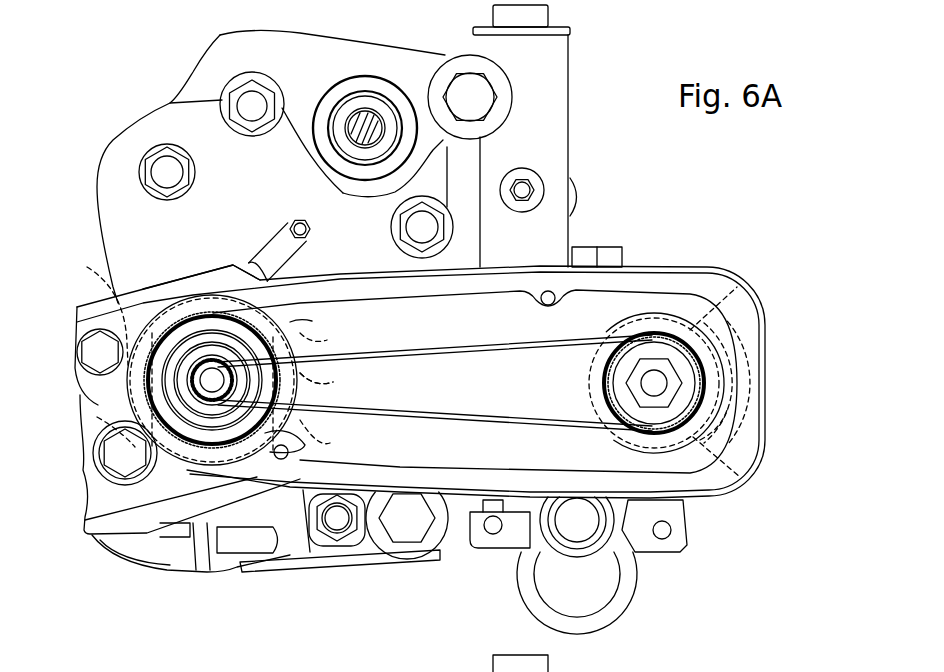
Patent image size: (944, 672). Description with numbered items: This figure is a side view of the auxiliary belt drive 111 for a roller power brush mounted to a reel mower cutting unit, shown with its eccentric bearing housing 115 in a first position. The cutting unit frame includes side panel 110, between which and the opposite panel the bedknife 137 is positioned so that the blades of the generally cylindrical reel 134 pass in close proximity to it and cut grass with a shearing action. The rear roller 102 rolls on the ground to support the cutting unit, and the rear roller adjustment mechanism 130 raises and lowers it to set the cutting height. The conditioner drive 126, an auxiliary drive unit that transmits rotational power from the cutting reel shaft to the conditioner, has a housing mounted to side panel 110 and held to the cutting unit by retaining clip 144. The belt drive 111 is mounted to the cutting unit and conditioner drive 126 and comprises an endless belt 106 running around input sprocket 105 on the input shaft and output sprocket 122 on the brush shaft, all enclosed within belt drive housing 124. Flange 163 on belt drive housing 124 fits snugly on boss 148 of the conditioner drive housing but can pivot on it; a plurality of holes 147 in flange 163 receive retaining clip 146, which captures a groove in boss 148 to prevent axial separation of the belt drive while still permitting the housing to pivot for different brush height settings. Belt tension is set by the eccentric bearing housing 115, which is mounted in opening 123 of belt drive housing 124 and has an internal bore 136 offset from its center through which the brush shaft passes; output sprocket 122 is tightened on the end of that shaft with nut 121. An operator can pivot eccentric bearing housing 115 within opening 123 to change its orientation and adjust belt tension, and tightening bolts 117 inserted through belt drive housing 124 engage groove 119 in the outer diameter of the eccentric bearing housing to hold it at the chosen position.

The rear roller 102 is at (623, 570).
The input sprocket 105 is at (187, 378).
The endless belt 106 is at (462, 417).
The side panel 110 is at (258, 191).
The belt drive 111 is at (770, 230).
The eccentric bearing housing 115 is at (703, 385).
The tightening bolts 117 is at (745, 320).
The groove 119 is at (727, 410).
The nut 121 is at (660, 362).
The output sprocket 122 is at (707, 355).
The opening 123 is at (626, 387).
The belt drive housing 124 is at (657, 273).
The conditioner drive 126 is at (88, 560).
The rear roller adjustment mechanism 130 is at (556, 126).
The cylindrical reel 134 is at (177, 552).
The internal bore 136 is at (641, 370).
The bedknife 137 is at (300, 573).
The retaining clip 144 is at (220, 272).
The retaining clip 146 is at (173, 297).
The holes 147 is at (110, 287).
The boss 148 is at (300, 322).
The flange 163 is at (333, 382).